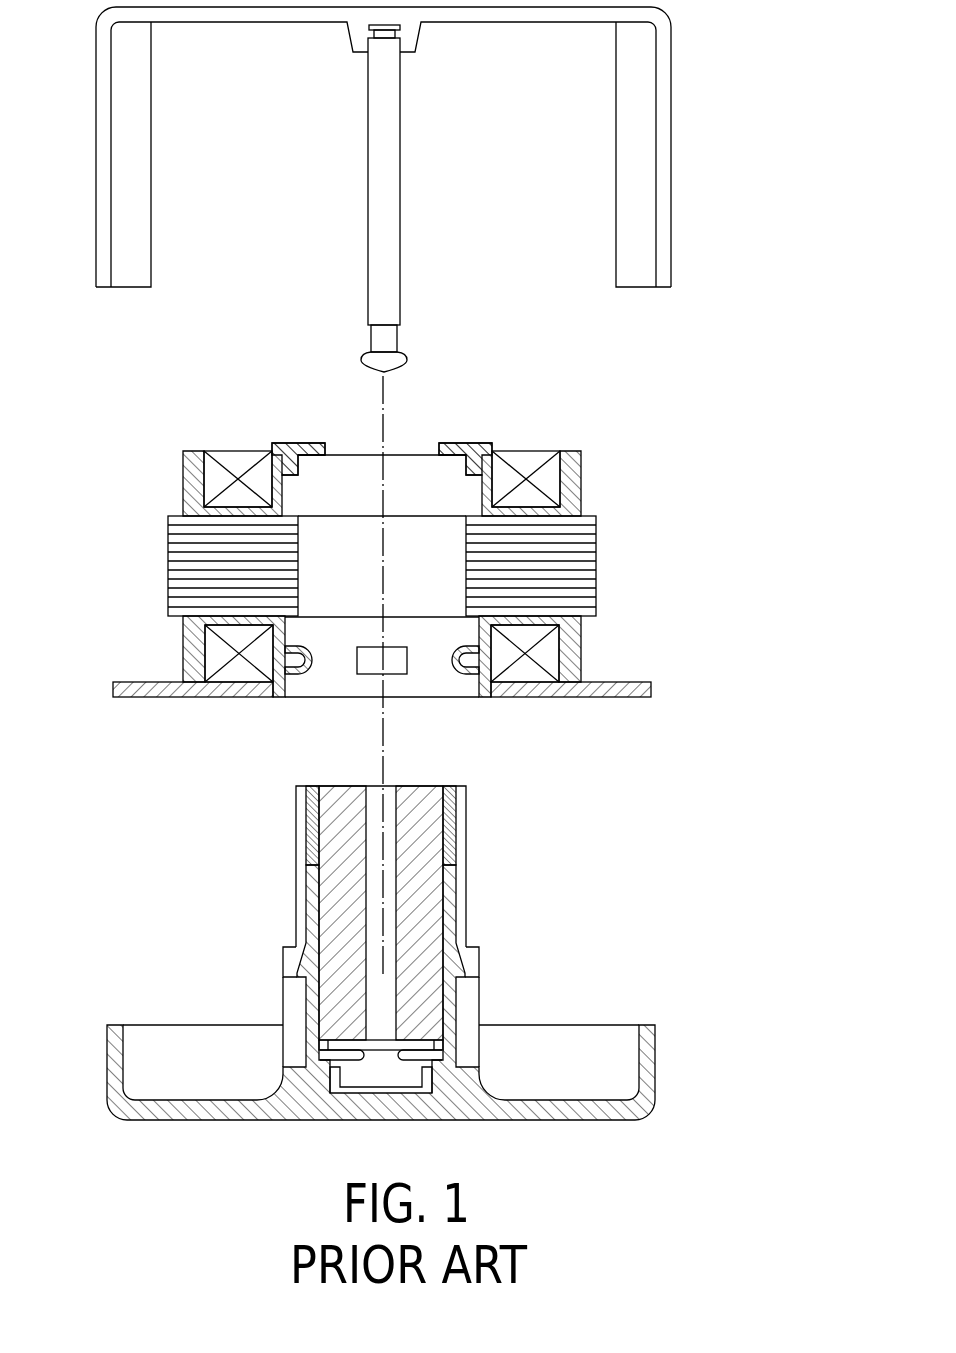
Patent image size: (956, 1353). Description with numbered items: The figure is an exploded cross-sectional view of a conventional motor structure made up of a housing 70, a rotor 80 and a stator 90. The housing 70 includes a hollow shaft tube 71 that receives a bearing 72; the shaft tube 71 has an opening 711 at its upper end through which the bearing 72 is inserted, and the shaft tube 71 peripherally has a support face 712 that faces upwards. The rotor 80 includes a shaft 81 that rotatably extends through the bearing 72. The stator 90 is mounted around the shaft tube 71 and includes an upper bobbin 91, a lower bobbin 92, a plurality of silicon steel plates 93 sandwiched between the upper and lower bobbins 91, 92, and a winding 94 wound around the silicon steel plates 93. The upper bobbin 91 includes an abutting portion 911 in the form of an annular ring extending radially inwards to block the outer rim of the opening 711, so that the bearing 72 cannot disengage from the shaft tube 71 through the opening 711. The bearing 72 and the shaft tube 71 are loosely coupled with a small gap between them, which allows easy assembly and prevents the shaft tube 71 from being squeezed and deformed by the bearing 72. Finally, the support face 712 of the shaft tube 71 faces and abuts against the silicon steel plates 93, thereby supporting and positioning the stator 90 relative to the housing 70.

The housing 70 is at (449, 933).
The shaft tube 71 is at (433, 898).
The opening 711 is at (447, 785).
The support face 712 is at (473, 945).
The bearing 72 is at (432, 845).
The rotor 80 is at (683, 177).
The shaft 81 is at (390, 235).
The stator 90 is at (433, 528).
The upper bobbin 91 is at (577, 475).
The abutting portion 911 is at (445, 443).
The lower bobbin 92 is at (570, 657).
The silicon steel plates 93 is at (593, 530).
The winding 94 is at (520, 460).